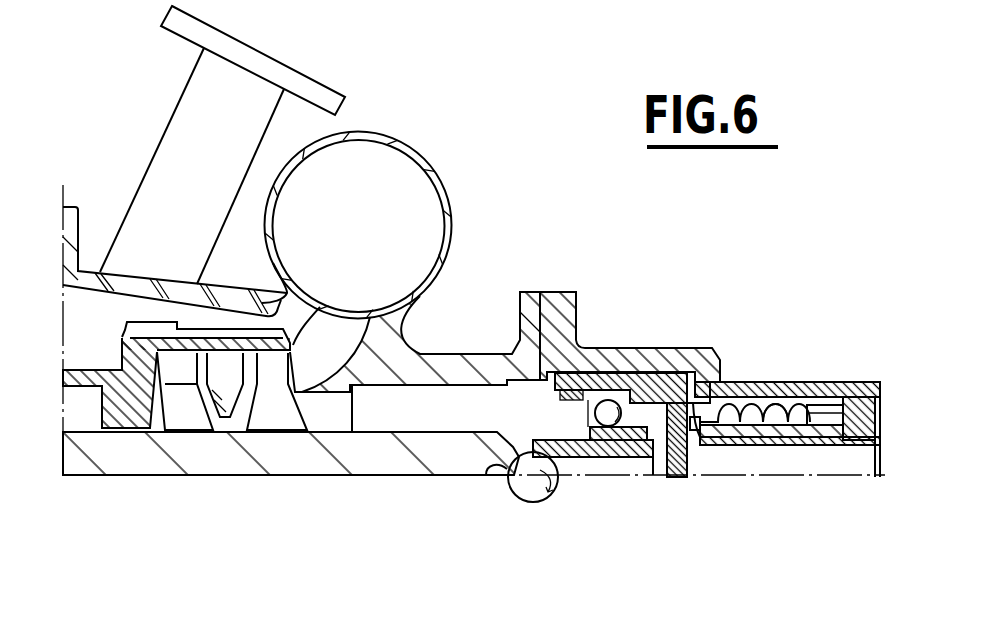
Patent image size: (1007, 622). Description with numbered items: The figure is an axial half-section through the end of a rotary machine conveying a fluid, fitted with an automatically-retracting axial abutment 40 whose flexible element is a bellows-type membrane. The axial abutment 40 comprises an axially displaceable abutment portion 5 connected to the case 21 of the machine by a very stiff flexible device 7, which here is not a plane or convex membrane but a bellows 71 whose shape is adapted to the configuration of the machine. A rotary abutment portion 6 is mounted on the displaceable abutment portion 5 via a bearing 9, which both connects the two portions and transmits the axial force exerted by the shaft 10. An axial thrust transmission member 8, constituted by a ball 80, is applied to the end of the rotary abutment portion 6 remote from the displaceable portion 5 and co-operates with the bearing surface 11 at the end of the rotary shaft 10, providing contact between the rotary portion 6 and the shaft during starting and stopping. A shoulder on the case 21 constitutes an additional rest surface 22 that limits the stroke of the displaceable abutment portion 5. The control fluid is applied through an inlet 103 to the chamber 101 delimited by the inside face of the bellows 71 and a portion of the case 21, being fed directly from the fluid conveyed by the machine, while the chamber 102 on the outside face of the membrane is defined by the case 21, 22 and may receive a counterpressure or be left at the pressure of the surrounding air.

The displaceable abutment portion 5 is at (628, 373).
The rotary abutment portion 6 is at (605, 457).
The flexible device 7 is at (750, 403).
The axial thrust transmission member 8 is at (543, 502).
The bearing 9 is at (627, 443).
The shaft 10 is at (375, 457).
The bearing surface 11 is at (486, 478).
The case 21 is at (852, 383).
The additional rest surface 22 is at (718, 375).
The axial abutment 40 is at (675, 481).
The bellows 71 is at (778, 405).
The ball 80 is at (517, 497).
The chamber 101 is at (790, 430).
The chamber 102 is at (822, 412).
The inlet 103 is at (703, 437).